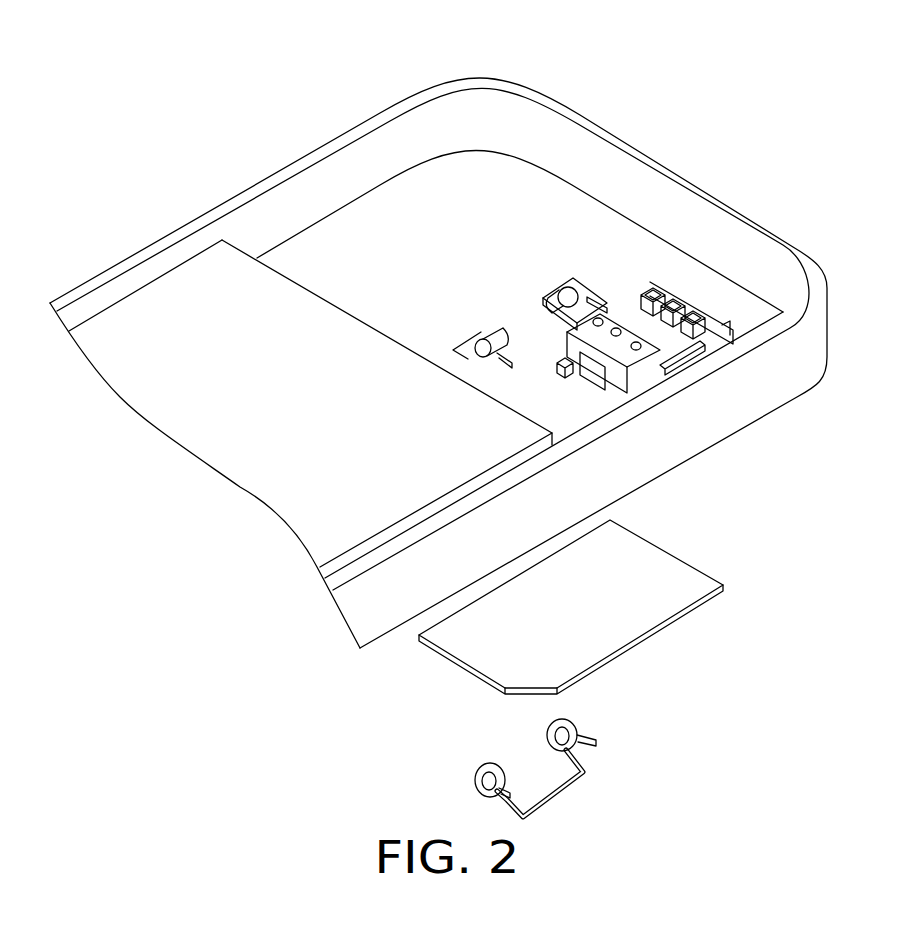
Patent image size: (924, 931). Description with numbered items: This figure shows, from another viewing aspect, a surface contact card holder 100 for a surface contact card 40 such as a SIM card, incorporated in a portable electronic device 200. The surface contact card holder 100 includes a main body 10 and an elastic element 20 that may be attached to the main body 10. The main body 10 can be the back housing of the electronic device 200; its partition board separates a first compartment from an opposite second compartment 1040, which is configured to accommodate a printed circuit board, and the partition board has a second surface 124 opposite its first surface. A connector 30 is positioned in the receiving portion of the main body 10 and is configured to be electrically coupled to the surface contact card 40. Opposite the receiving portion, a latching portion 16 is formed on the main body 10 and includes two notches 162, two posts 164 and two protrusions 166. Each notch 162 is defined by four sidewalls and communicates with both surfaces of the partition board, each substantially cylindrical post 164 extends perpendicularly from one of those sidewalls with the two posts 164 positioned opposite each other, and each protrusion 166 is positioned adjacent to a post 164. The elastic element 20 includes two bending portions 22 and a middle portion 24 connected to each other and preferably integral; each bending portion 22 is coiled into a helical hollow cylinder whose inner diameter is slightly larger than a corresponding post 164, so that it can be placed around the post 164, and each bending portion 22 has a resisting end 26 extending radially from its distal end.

The electronic device 200 is at (330, 51).
The surface contact card holder 100 is at (798, 483).
The main body 10 is at (693, 470).
The second compartment 1040 is at (195, 247).
The second surface 124 is at (383, 228).
The latching portion 16 is at (627, 46).
The notch 162 is at (583, 292).
The post 164 is at (562, 296).
The protrusion 166 is at (605, 298).
The connector 30 is at (670, 344).
The surface contact card 40 is at (477, 652).
The elastic element 20 is at (598, 763).
The bending portion 22 is at (563, 720).
The middle portion 24 is at (548, 798).
The resisting end 26 is at (588, 737).